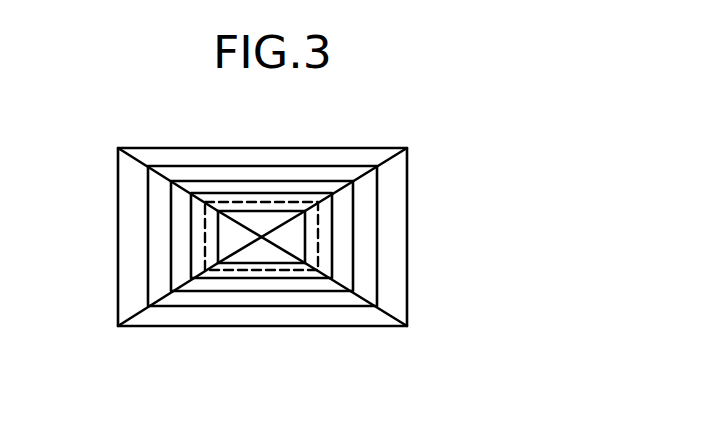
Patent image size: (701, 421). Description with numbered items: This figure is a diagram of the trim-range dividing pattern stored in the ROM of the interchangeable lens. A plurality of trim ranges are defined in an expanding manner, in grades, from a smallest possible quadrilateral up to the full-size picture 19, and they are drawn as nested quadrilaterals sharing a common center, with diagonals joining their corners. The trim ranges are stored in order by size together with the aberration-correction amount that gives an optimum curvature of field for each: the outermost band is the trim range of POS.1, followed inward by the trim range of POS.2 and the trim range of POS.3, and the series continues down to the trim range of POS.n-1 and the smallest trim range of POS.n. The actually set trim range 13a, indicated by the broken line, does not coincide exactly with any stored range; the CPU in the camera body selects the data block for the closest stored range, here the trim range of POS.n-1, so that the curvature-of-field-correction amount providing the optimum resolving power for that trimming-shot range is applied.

The full-size picture 19 is at (407, 190).
The actually set trim range 13a is at (203, 231).
The trim range of pos. 1 POS.1 is at (390, 250).
The trim range of pos. 2 POS.2 is at (363, 277).
The trim range of pos. 3 POS.3 is at (327, 285).
The trim range of pos. n-1 POS.n-1 is at (287, 270).
The trim range of pos. n POS.n is at (265, 255).